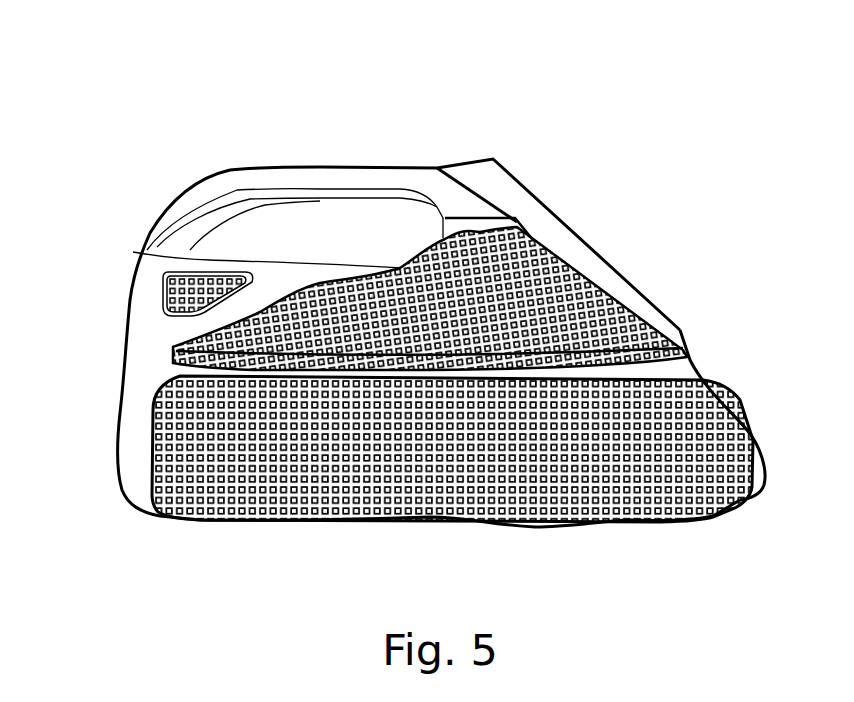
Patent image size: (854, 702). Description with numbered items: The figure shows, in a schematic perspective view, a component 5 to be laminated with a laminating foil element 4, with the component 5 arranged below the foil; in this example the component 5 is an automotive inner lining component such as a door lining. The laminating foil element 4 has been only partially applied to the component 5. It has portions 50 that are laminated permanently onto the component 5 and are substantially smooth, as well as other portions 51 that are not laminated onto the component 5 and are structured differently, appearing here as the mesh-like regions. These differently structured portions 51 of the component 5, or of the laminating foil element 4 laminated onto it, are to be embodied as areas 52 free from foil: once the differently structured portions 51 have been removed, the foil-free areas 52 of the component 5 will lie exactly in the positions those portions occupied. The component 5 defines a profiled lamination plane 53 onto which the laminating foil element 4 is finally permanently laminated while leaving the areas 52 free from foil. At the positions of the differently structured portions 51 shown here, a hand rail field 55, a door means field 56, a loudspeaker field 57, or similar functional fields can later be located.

The laminating foil element 4 is at (218, 192).
The component 5 is at (567, 86).
The portions laminated permanently onto the component 50 is at (358, 180).
The differently structured portions 51 is at (163, 283).
The areas free from foil 52 is at (172, 270).
The profiled lamination plane 53 is at (463, 142).
The hand rail field 55 is at (628, 515).
The door means field 56 is at (630, 328).
The loudspeaker field 57 is at (207, 280).